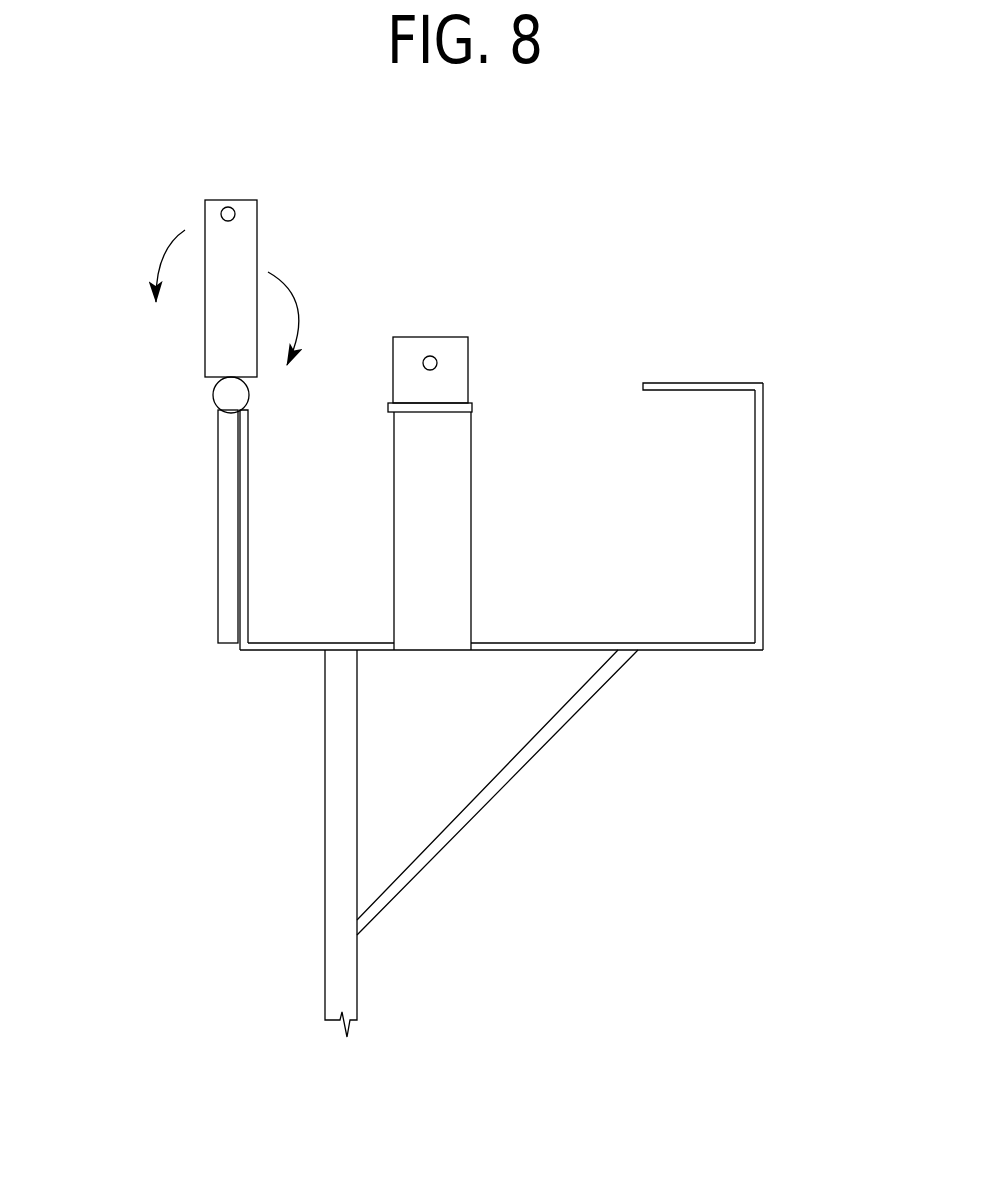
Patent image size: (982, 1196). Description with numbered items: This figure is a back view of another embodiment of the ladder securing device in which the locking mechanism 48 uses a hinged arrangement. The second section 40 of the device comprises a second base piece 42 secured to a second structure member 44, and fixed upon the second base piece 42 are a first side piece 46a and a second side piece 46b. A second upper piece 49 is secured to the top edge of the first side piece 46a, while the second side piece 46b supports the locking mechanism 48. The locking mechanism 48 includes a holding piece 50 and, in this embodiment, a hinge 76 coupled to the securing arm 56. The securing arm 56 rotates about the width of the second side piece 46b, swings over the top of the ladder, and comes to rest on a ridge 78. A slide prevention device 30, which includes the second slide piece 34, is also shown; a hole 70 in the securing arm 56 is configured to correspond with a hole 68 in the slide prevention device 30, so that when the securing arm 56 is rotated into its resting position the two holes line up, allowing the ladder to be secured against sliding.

The slide prevention device 30 is at (375, 298).
The second slide piece 34 is at (471, 517).
The second section 40 is at (302, 748).
The second base piece 42 is at (678, 650).
The second structure member 44 is at (338, 863).
The first side piece 46a is at (763, 507).
The second side piece 46b is at (248, 490).
The locking mechanism 48 is at (197, 532).
The second upper piece 49 is at (680, 380).
The holding piece 50 is at (218, 603).
The securing arm 56 is at (257, 265).
The hole 68 is at (430, 356).
The hole 70 is at (228, 207).
The hinge 76 is at (230, 395).
The ridge 78 is at (472, 403).